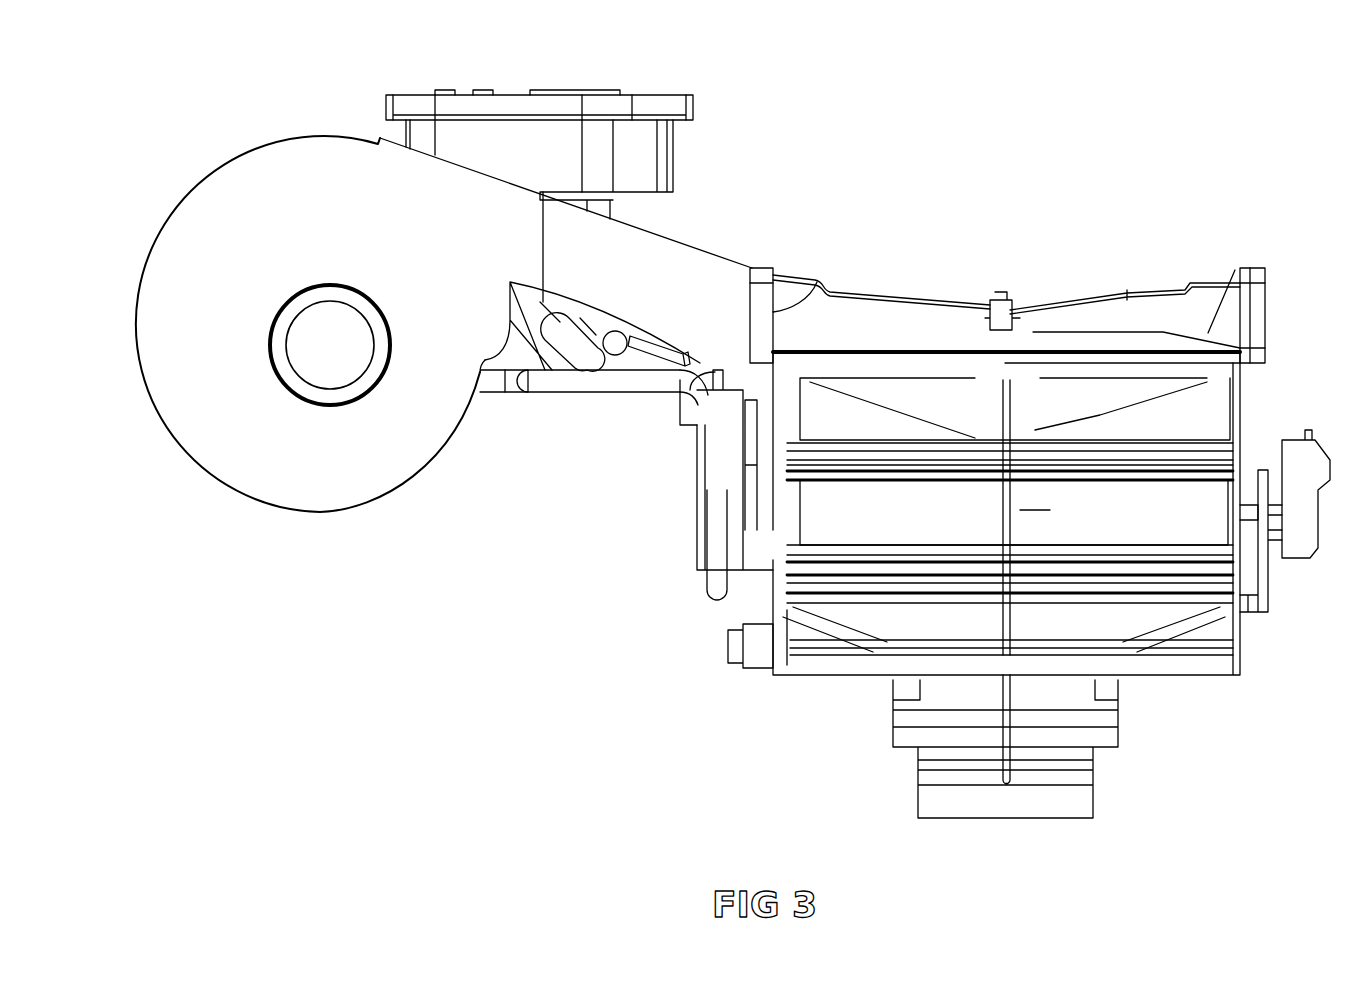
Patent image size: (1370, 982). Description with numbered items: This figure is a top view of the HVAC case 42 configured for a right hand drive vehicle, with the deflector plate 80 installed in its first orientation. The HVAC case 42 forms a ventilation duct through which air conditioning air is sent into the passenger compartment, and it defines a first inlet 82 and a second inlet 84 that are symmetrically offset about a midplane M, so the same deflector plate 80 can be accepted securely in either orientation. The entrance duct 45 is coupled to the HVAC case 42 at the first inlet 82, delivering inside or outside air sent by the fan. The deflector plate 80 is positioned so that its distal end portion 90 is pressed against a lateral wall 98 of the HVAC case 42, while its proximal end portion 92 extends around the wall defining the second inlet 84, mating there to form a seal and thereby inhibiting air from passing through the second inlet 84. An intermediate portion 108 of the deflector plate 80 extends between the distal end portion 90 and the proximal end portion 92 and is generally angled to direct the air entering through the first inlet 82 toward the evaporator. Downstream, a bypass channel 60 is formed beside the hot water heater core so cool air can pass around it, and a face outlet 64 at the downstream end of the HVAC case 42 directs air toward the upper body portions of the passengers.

The entrance duct 45 is at (683, 262).
The first opening or inlet 82 is at (805, 305).
The HVAC case 42 is at (873, 290).
The midplane M is at (1005, 400).
The distal end portion 90 is at (1020, 308).
The lateral wall 98 is at (1057, 322).
The deflector plate 80 is at (1100, 333).
The intermediate portion 108 is at (1157, 330).
The proximal end portion 92 is at (1235, 337).
The second opening or inlet 84 is at (1243, 268).
The bypass channel 60 is at (790, 523).
The face outlet 64 is at (847, 613).